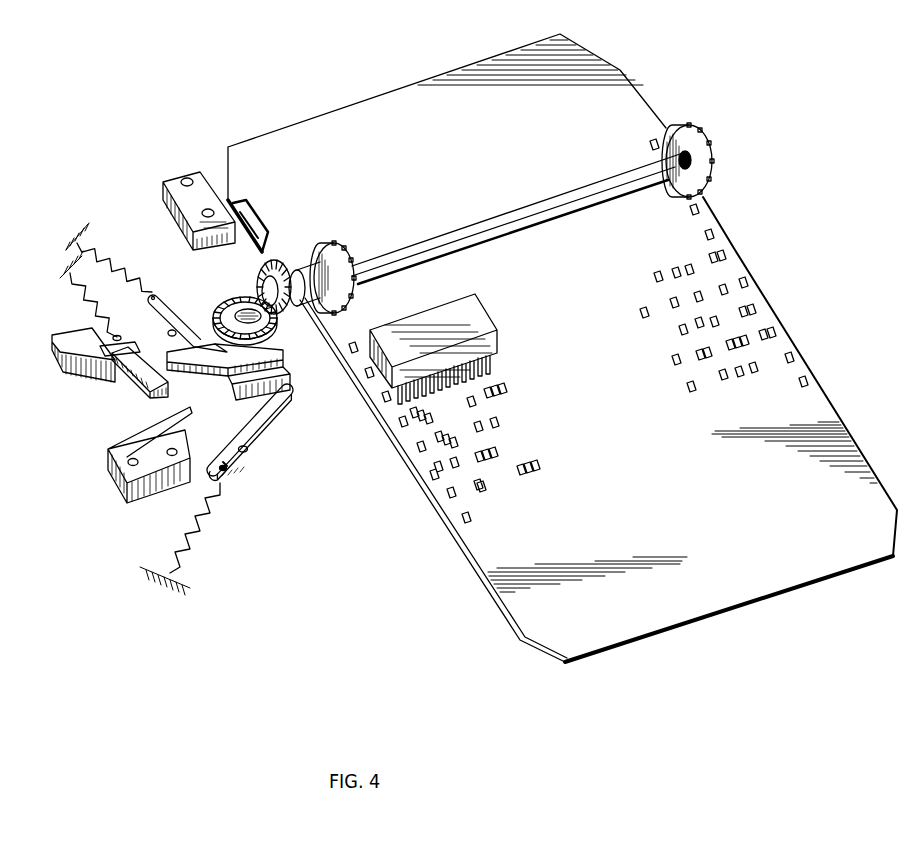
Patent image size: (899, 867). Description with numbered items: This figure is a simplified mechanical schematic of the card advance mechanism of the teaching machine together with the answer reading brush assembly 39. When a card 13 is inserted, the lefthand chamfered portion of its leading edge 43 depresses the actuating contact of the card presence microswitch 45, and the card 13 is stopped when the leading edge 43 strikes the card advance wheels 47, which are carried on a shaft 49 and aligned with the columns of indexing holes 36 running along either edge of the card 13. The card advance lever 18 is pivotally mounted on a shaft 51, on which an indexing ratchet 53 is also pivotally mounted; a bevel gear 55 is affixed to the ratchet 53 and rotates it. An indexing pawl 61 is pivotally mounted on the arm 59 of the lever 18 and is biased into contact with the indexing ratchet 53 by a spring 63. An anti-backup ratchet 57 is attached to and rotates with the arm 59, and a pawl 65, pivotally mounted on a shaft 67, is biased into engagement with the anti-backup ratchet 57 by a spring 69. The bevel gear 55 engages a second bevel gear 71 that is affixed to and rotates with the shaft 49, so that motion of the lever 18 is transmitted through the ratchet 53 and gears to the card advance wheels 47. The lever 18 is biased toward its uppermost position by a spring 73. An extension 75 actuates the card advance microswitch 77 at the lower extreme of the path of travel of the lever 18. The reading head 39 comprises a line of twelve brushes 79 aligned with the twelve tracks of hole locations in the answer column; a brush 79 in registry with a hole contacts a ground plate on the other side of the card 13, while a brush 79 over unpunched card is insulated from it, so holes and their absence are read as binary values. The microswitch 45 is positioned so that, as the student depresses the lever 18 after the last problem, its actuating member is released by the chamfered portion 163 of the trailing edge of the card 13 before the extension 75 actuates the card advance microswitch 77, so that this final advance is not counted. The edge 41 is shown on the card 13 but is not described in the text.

The card 13 is at (373, 108).
The chamfered portion of the trailing edge 163 is at (227, 163).
The microswitch 45 is at (178, 186).
The card advance wheels 47 is at (330, 250).
The shaft 49 is at (472, 225).
The spring 63 is at (112, 270).
The indexing pawl 61 is at (158, 298).
The bevel gear 55 is at (266, 300).
The shaft 51 is at (240, 313).
The indexing ratchet 53 is at (222, 320).
The arm 59 is at (120, 335).
The spring 73 is at (100, 320).
The bevel gear 71 is at (292, 312).
The answer reading brush assembly 39 is at (478, 321).
The brushes 79 is at (494, 370).
The card advance lever 18 is at (72, 366).
The extension of the shaft 75 is at (140, 388).
The anti-backup ratchet 57 is at (234, 400).
The pawl 65 is at (268, 418).
The shaft 67 is at (248, 449).
The indexing holes 36 is at (415, 449).
The card advance microswitch 77 is at (112, 476).
The spring 69 is at (200, 526).
The plate edge 41 is at (533, 653).
The leading edge 43 is at (688, 632).